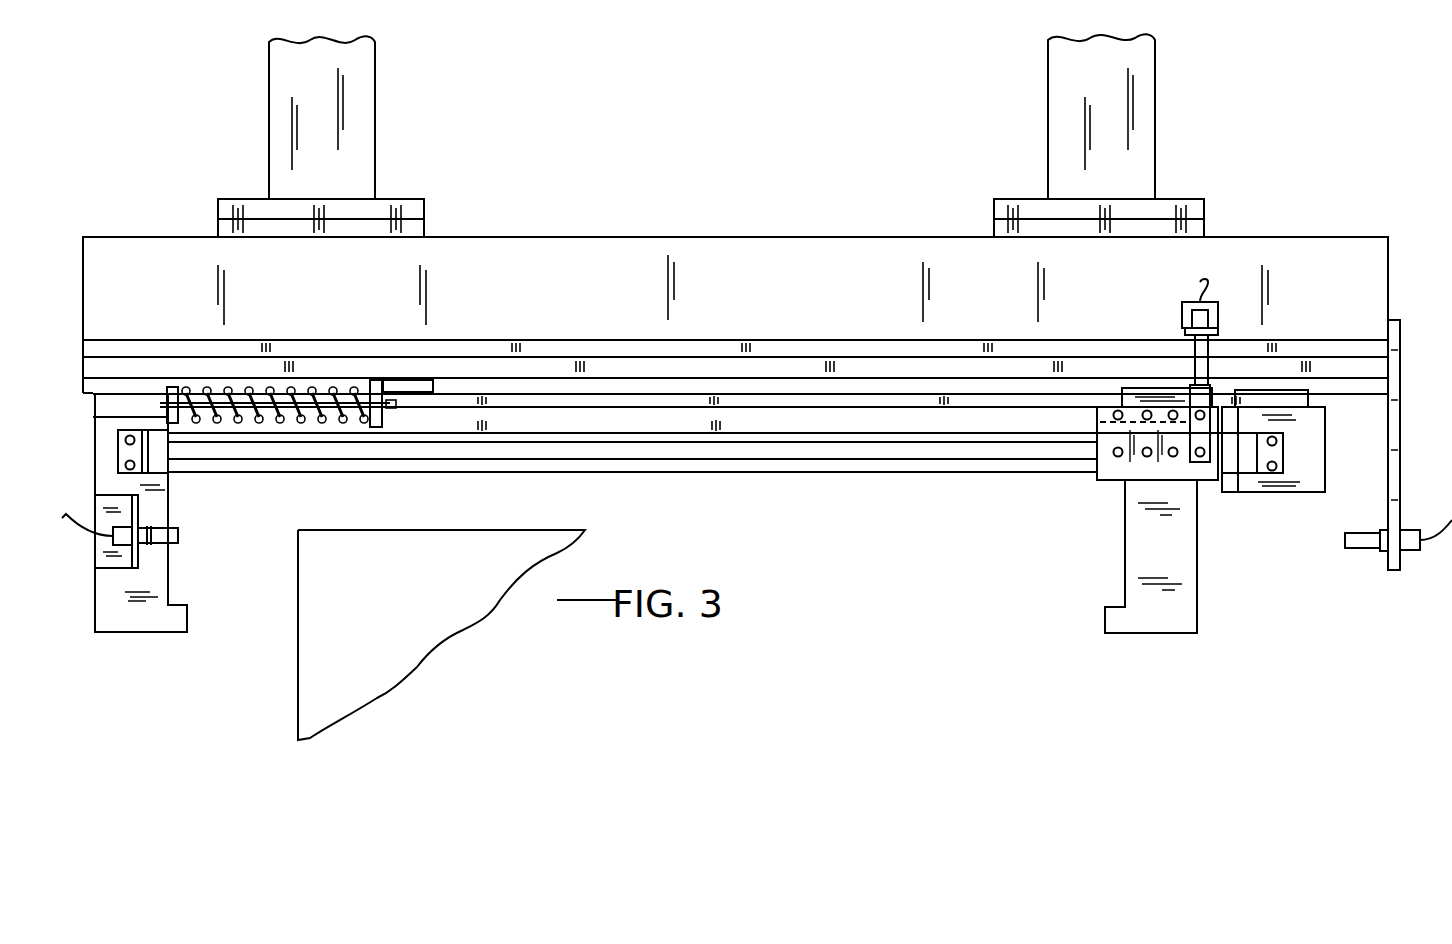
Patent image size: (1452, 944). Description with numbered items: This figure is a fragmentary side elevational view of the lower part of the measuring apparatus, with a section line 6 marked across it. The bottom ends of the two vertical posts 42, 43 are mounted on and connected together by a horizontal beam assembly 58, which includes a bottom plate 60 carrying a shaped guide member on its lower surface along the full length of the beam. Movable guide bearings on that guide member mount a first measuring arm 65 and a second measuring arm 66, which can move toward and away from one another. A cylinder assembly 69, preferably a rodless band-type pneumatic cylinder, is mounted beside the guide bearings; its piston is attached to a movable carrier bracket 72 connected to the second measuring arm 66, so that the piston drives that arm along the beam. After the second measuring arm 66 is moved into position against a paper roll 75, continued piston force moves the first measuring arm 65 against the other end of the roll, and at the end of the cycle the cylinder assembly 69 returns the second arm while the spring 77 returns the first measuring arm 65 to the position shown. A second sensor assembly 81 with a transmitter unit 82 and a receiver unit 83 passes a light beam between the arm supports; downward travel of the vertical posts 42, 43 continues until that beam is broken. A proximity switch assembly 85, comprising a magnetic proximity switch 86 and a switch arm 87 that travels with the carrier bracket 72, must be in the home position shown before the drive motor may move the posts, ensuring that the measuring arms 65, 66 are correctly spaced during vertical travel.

The vertical post 42 is at (375, 137).
The vertical post 43 is at (1048, 120).
The horizontal beam assembly 58 is at (793, 283).
The bottom plate 60 is at (795, 372).
The first measuring arm 65 is at (172, 577).
The second measuring arm 66 is at (1122, 560).
The cylinder assembly 69 is at (846, 475).
The carrier bracket 72 is at (1095, 455).
The paper roll 75 is at (296, 708).
The spring 77 is at (267, 420).
The second sensor assembly 81 is at (159, 552).
The transmitter unit 82 is at (178, 533).
The receiver unit 83 is at (1360, 549).
The proximity switch assembly 85 is at (1225, 348).
The magnetic proximity switch 86 is at (1195, 350).
The switch arm 87 is at (1192, 398).
The section line 6- 6 is at (1237, 163).